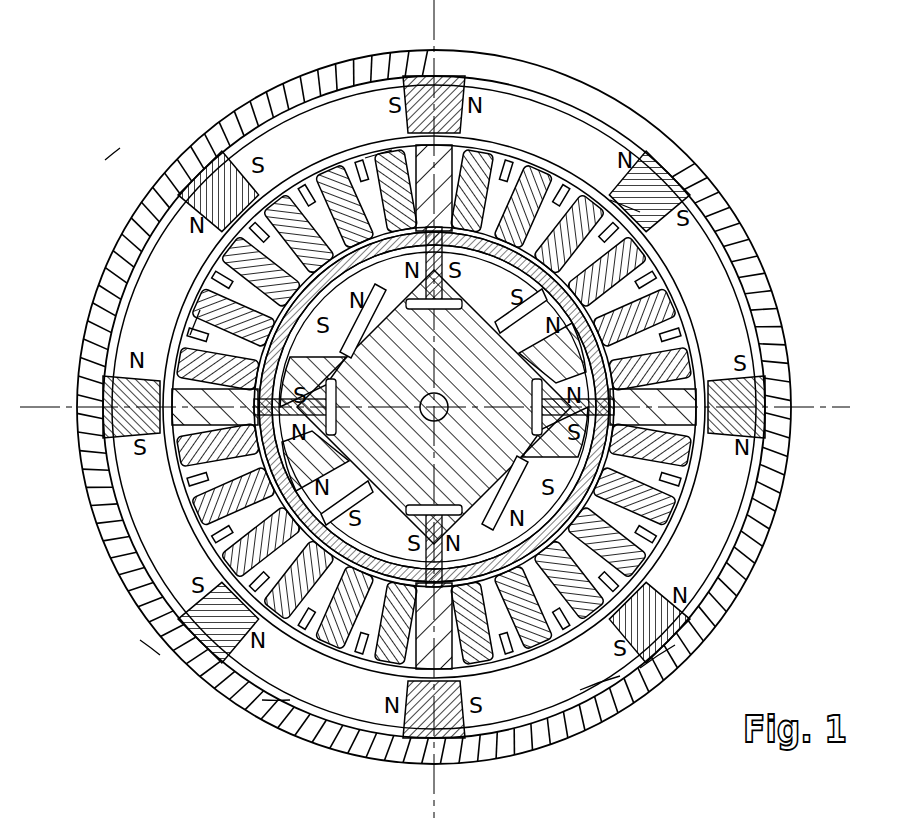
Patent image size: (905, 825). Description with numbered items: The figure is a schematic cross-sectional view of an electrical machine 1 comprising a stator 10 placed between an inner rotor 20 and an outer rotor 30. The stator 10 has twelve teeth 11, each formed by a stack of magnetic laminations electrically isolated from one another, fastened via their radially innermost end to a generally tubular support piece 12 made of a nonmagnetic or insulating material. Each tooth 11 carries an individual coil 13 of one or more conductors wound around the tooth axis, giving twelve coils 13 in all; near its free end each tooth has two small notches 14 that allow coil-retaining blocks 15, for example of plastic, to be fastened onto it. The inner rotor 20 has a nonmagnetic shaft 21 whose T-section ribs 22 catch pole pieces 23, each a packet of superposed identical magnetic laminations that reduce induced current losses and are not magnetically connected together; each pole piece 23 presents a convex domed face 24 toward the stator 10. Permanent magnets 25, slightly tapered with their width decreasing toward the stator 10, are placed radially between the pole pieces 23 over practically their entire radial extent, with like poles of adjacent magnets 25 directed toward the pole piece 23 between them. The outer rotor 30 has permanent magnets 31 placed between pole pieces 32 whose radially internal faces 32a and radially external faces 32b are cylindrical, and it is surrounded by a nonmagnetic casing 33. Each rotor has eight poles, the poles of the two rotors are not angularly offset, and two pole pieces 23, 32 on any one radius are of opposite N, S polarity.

The electrical machine 1 is at (103, 168).
The stator 10 is at (218, 172).
The teeth 11 is at (318, 188).
The support piece 12 is at (195, 520).
The coil 13 is at (392, 155).
The notches 14 is at (270, 695).
The coil-retaining blocks 15 is at (522, 150).
The inner rotor 20 is at (700, 562).
The shaft 21 is at (381, 369).
The ribs 22 is at (442, 414).
The pole pieces 23 is at (410, 275).
The convex domed face 24 is at (690, 235).
The permanent magnets 25 is at (520, 330).
The outer rotor 30 is at (143, 641).
The permanent magnets 31 is at (447, 88).
The pole pieces 32 is at (515, 110).
The radially internal faces 32a is at (603, 704).
The radially external faces 32b is at (658, 688).
The nonmagnetic casing 33 is at (232, 123).